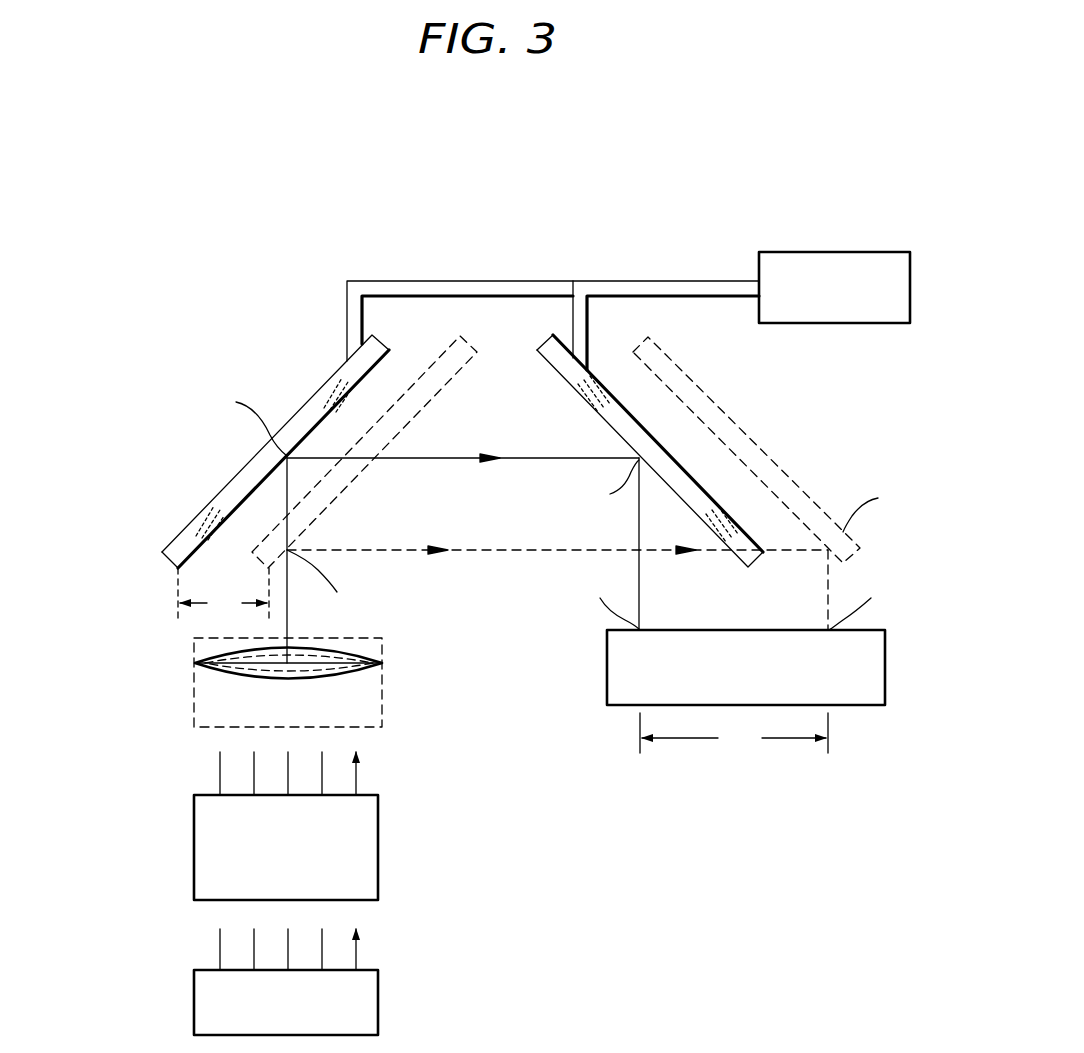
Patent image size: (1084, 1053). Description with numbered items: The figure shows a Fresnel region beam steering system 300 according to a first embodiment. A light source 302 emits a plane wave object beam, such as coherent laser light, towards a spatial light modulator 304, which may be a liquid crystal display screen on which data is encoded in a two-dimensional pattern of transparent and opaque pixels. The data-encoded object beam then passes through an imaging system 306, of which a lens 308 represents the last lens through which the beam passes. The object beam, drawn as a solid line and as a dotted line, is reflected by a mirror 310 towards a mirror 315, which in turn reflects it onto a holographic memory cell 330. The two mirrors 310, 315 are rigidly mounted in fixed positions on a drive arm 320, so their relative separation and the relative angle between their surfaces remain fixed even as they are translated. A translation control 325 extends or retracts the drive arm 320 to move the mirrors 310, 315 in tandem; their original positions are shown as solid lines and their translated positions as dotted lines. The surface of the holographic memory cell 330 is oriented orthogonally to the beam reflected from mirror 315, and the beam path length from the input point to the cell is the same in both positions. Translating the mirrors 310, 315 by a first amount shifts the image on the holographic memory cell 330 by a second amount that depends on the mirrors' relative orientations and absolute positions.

The Fresnel region beam steering system 300 is at (637, 181).
The light source 302 is at (380, 1005).
The spatial light modulator 304 is at (380, 850).
The imaging system 306 is at (194, 727).
The lens 308 is at (195, 663).
The mirror 310 is at (222, 488).
The mirror 315 is at (582, 403).
The drive arm 320 is at (508, 281).
The translation control 325 is at (837, 252).
The holographic memory cell 330 is at (885, 640).